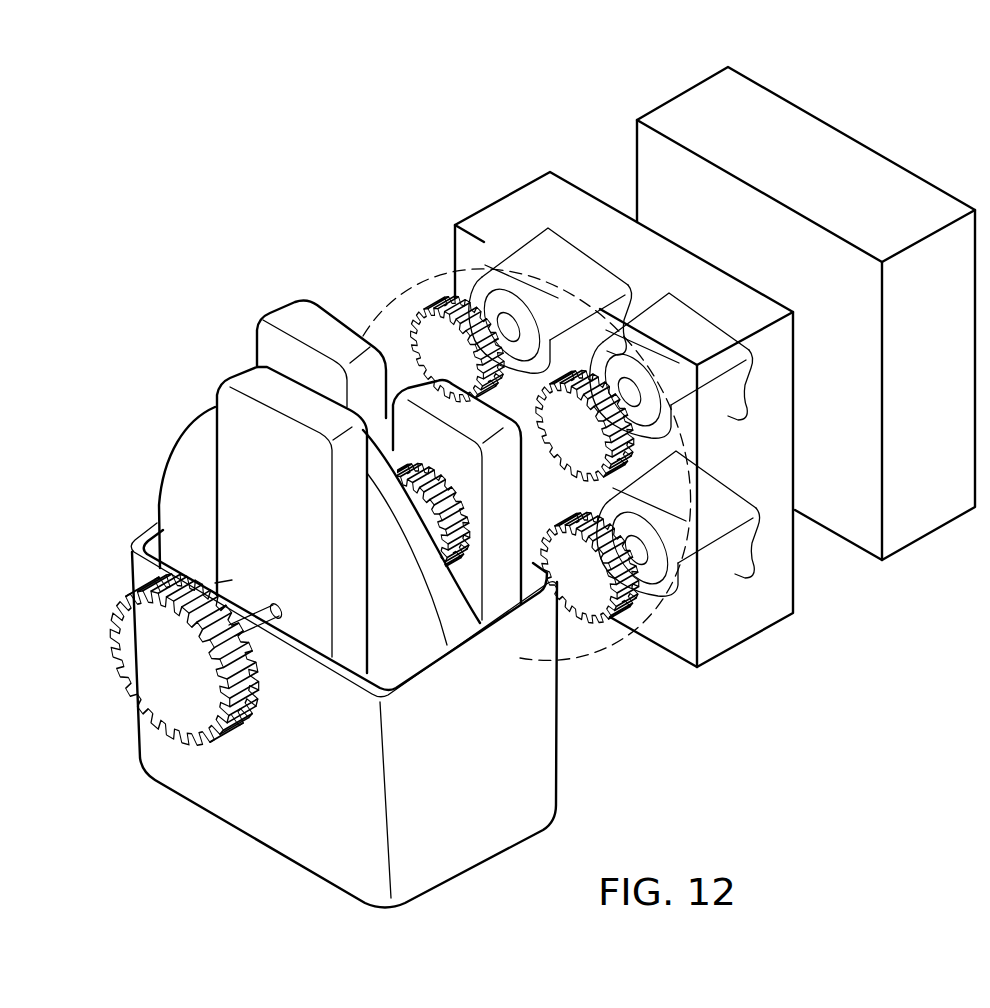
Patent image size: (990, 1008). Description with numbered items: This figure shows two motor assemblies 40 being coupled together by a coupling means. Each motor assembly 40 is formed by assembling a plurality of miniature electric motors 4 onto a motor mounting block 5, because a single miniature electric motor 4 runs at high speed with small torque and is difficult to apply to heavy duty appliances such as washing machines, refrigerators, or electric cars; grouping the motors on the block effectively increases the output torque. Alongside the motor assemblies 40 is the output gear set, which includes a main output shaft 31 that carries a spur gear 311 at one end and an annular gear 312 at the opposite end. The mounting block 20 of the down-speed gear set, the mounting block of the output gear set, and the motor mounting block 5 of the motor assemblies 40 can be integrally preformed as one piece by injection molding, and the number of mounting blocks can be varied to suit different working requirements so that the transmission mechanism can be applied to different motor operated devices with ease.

The motor mounting block 5 is at (810, 133).
The miniature electric motor 4 is at (550, 267).
The mounting block 20 is at (297, 320).
The annular gear 312 is at (190, 452).
The spur gear 311 is at (145, 692).
The main output shaft 31 is at (243, 630).
The motor assembly 40 is at (818, 648).